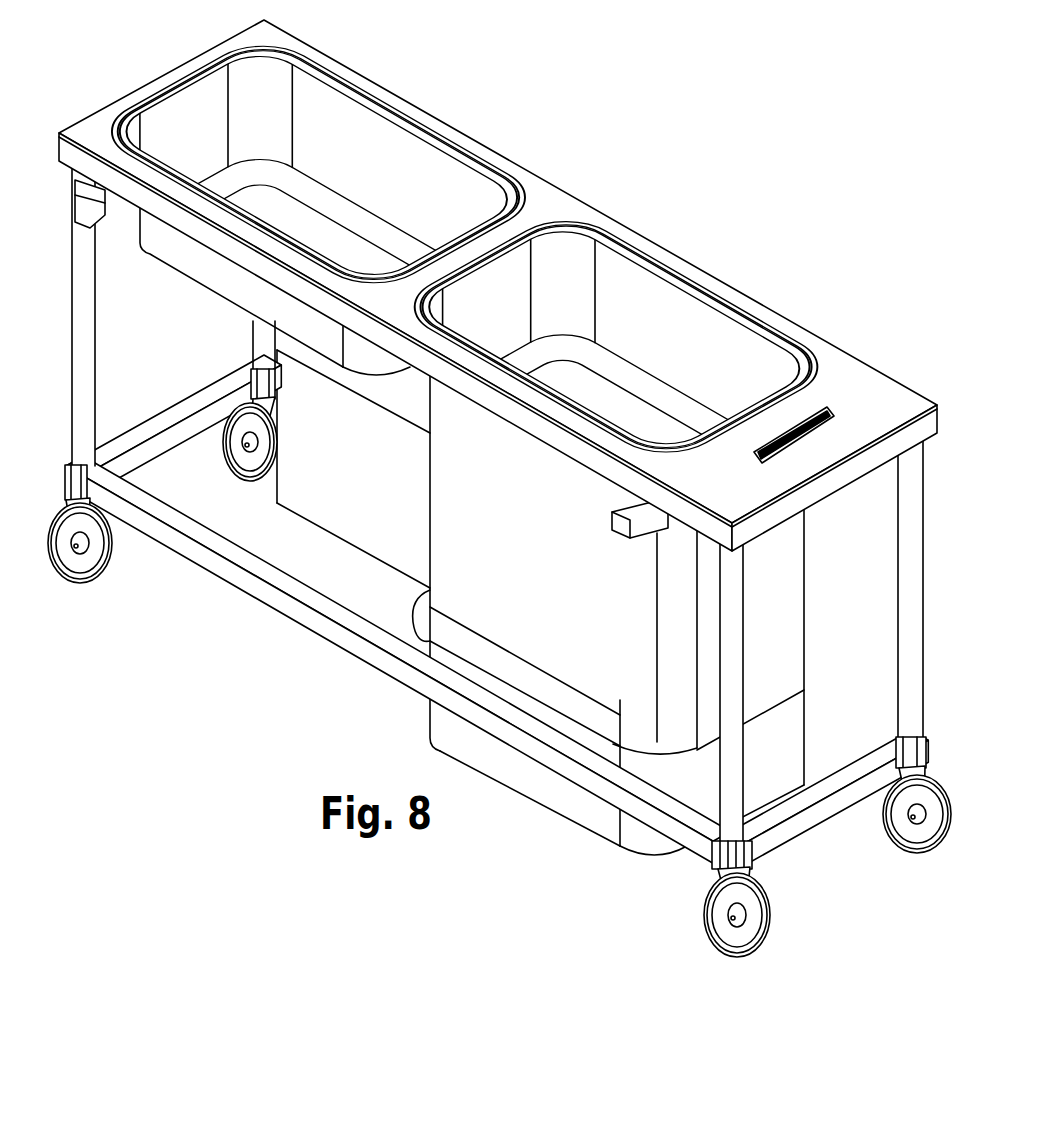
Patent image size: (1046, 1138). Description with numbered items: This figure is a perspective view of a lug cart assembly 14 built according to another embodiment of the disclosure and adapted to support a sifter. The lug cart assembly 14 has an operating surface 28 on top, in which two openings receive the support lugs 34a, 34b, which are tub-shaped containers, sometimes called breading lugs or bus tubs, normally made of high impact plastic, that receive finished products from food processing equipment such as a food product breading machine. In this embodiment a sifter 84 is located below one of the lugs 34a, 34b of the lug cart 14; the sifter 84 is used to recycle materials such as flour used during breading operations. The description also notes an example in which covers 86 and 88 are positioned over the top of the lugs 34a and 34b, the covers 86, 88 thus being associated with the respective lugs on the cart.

The lug cart assembly 14 is at (651, 163).
The operating surface 28 is at (865, 362).
The support lug 34a is at (758, 318).
The support lug 34b is at (293, 52).
The sifter 84 is at (581, 829).
The cover 86 is at (682, 340).
The cover 88 is at (390, 177).